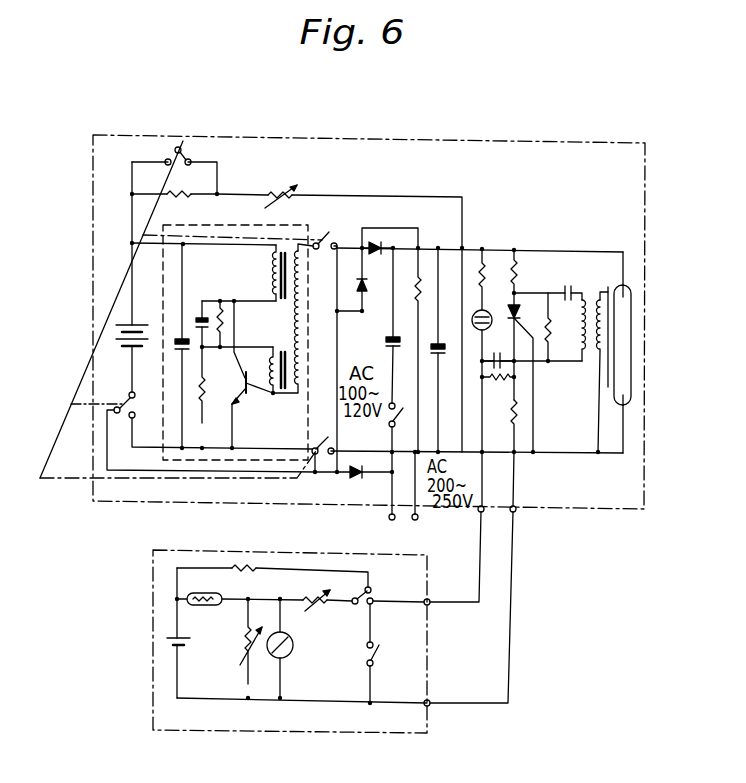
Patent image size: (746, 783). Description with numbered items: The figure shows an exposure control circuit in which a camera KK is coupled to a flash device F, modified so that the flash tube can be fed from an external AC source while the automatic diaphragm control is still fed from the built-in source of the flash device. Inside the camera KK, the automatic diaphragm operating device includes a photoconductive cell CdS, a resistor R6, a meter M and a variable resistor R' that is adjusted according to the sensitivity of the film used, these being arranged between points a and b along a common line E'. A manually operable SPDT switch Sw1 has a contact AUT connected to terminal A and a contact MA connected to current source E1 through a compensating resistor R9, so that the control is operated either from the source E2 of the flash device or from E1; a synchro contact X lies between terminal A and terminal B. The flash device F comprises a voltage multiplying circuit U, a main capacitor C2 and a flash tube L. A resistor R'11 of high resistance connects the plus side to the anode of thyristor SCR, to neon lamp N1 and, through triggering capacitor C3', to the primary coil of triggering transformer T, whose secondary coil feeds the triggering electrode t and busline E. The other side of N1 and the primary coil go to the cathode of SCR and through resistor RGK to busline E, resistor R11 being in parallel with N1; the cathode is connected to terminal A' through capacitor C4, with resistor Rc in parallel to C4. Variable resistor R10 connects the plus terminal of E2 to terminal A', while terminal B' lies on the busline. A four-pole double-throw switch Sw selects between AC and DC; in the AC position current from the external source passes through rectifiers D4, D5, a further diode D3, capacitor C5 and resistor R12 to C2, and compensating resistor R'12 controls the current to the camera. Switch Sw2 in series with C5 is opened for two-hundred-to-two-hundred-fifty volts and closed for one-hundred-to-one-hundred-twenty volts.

The flash device F is at (542, 142).
The four-pole double-throw switch Sw is at (154, 484).
The external AC source position AC is at (257, 341).
The internal DC source position DC is at (249, 306).
The compensating resistor R'12 is at (174, 210).
The variable resistor R10 is at (339, 206).
The current source E2 is at (125, 358).
The voltage multiplying circuit U is at (213, 223).
The rectifier D5 is at (390, 254).
The rectifier D4 is at (373, 284).
The resistor R12 is at (425, 275).
The capacitor C5 is at (396, 309).
The switch Sw2 is at (373, 430).
The main capacitor C2 is at (443, 350).
The diode D3 is at (353, 486).
The neon lamp N1 is at (477, 377).
The terminal A' is at (466, 554).
The capacitor C4 is at (498, 347).
The resistor Rc is at (503, 381).
The resistor R'11 is at (533, 272).
The thyristor SCR is at (527, 372).
The resistor RGK is at (508, 416).
The terminal B' is at (483, 577).
The triggering capacitor C3' is at (549, 280).
The resistor R11 is at (534, 327).
The triggering transformer T is at (588, 297).
The triggering electrode t is at (608, 388).
The flash tube L is at (631, 365).
The busline E is at (573, 476).
The camera KK is at (152, 658).
The current source E1 is at (187, 633).
The compensating resistor R9 is at (272, 583).
The photoconductive cell CdS is at (240, 612).
The terminal a is at (281, 586).
The variable resistor R6 is at (327, 612).
The manually operable SPDT switch Sw1 is at (381, 612).
The contact MA is at (382, 581).
The contact AUT is at (392, 620).
The synchro contact X is at (378, 652).
The terminal A is at (435, 615).
The variable resistor R' is at (243, 641).
The meter M is at (293, 648).
The terminal b is at (283, 715).
The terminal B is at (435, 716).
The common line E' is at (360, 735).